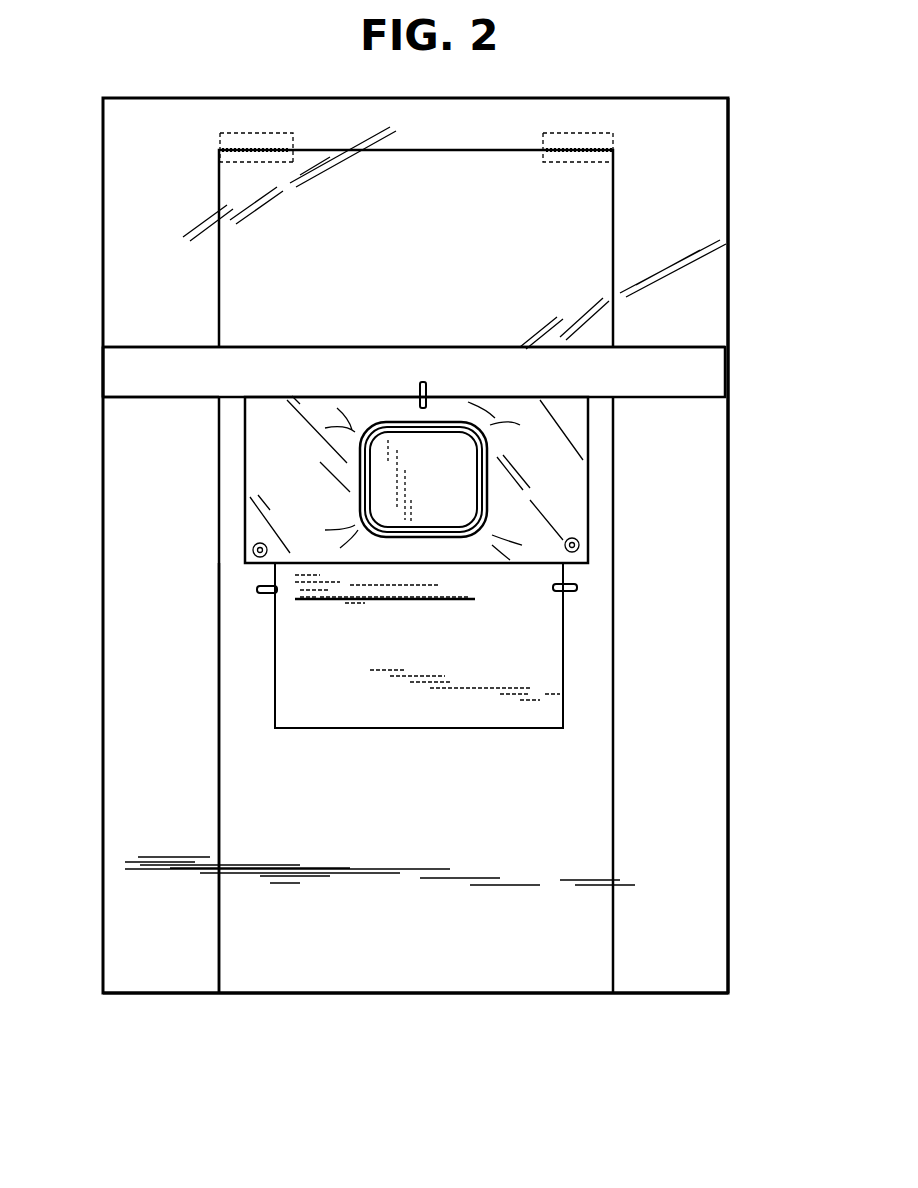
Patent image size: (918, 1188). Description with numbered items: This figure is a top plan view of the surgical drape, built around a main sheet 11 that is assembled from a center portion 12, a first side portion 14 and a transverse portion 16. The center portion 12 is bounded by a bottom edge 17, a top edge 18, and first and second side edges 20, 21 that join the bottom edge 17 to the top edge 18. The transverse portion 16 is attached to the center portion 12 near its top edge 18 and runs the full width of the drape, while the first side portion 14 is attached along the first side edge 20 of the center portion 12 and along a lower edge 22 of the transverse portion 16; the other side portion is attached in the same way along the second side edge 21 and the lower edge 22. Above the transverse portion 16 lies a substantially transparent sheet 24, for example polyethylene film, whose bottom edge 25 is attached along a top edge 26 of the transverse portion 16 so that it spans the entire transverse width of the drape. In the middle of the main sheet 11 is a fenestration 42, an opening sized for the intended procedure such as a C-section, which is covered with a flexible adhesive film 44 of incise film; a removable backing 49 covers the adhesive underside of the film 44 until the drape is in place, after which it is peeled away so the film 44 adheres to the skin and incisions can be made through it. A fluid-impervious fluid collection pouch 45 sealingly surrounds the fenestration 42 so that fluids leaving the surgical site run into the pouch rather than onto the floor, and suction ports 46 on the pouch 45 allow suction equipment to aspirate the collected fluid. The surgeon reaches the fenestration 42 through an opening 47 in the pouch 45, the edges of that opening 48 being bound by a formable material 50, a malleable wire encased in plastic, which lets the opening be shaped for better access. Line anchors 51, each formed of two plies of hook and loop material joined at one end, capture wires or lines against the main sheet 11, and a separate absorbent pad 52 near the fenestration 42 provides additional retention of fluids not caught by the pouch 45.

The main sheet 11 is at (728, 572).
The center portion 12 is at (595, 650).
The first side portion 14 is at (135, 895).
The transverse portion 16 is at (103, 378).
The bottom edge 17 is at (346, 993).
The top edge 18 is at (650, 347).
The first side edge 20 is at (219, 697).
The second side edge 21 is at (613, 417).
The lower edge 22 is at (165, 398).
The substantially transparent sheet 24 is at (700, 150).
The bottom edge 25 is at (707, 348).
The top edge 26 is at (695, 347).
The fenestration 42 is at (493, 475).
The flexible adhesive film 44 is at (447, 488).
The fluid collection pouch 45 is at (253, 477).
The suction port 46 is at (253, 552).
The opening 47 is at (430, 540).
The opening 48 is at (397, 540).
The removable backing 49 is at (380, 428).
The formable material 50 is at (350, 456).
The line anchor 51 is at (423, 382).
The absorbent pad 52 is at (532, 663).